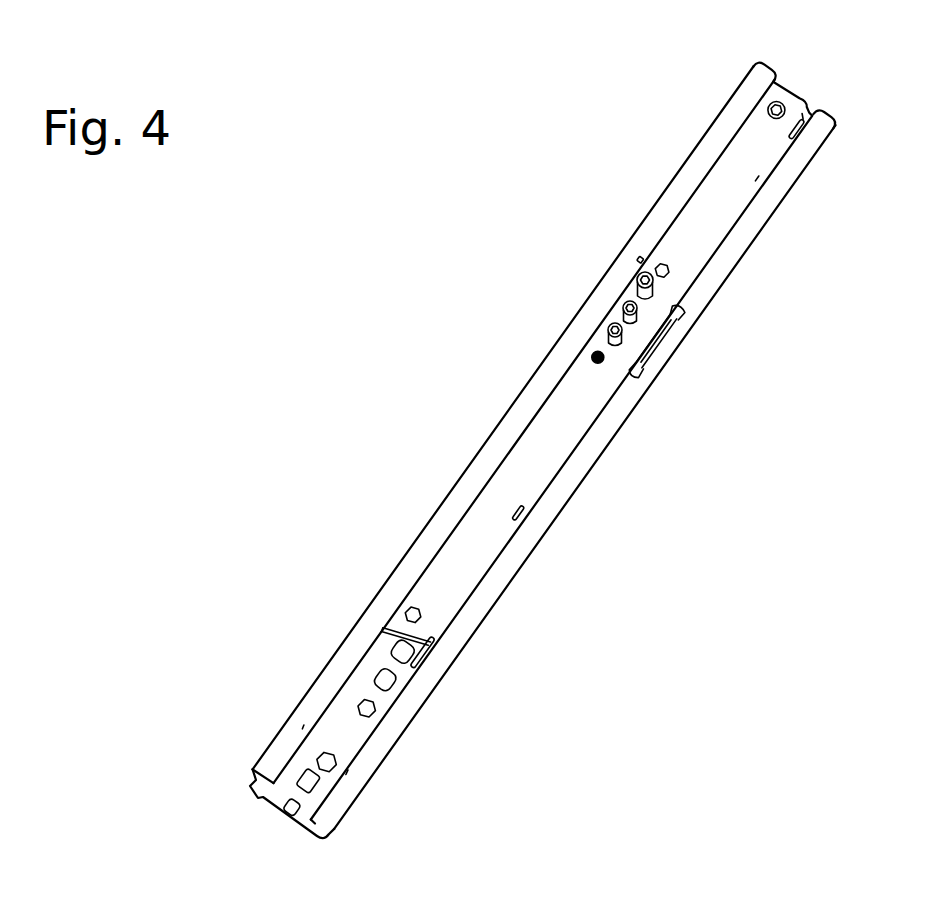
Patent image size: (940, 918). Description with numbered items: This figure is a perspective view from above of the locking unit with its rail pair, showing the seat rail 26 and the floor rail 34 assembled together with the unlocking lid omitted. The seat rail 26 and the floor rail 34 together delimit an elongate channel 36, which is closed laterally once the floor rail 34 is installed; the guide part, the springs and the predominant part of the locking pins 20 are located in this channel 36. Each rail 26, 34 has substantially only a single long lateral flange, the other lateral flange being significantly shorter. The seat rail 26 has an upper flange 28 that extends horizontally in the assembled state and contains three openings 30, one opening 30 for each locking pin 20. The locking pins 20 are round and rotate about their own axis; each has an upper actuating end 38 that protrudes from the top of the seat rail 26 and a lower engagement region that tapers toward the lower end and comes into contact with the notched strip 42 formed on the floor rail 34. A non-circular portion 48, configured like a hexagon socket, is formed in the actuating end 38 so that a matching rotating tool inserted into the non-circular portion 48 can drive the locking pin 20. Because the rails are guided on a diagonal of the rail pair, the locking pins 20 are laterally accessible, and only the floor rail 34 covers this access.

The locking pin 20 is at (652, 292).
The seat rail 26 is at (437, 593).
The upper flange 28 is at (520, 462).
The opening 30 is at (616, 337).
The floor rail 34 is at (320, 703).
The channel 36 is at (800, 86).
The actuating end 38 is at (609, 326).
The notched strip 42 is at (395, 668).
The non-circular portion 48 is at (641, 276).